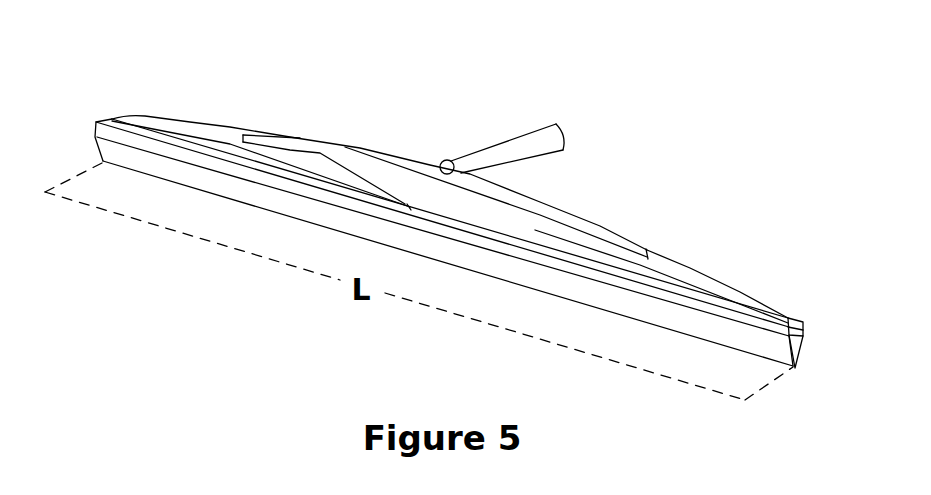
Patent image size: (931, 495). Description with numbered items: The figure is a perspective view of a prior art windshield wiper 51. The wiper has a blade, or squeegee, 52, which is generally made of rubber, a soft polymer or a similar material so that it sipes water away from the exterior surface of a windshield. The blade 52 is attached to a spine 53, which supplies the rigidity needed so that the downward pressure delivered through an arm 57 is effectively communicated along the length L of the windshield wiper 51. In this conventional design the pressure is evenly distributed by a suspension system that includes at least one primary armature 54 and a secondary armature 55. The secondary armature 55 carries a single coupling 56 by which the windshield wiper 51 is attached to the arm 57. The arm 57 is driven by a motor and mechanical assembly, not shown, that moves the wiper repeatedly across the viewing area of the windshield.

The prior art windshield wiper 51 is at (693, 140).
The blade 52 is at (798, 368).
The spine 53 is at (797, 323).
The primary armature 54 is at (188, 121).
The secondary armature 55 is at (296, 137).
The coupling 56 is at (441, 161).
The arm 57 is at (508, 141).